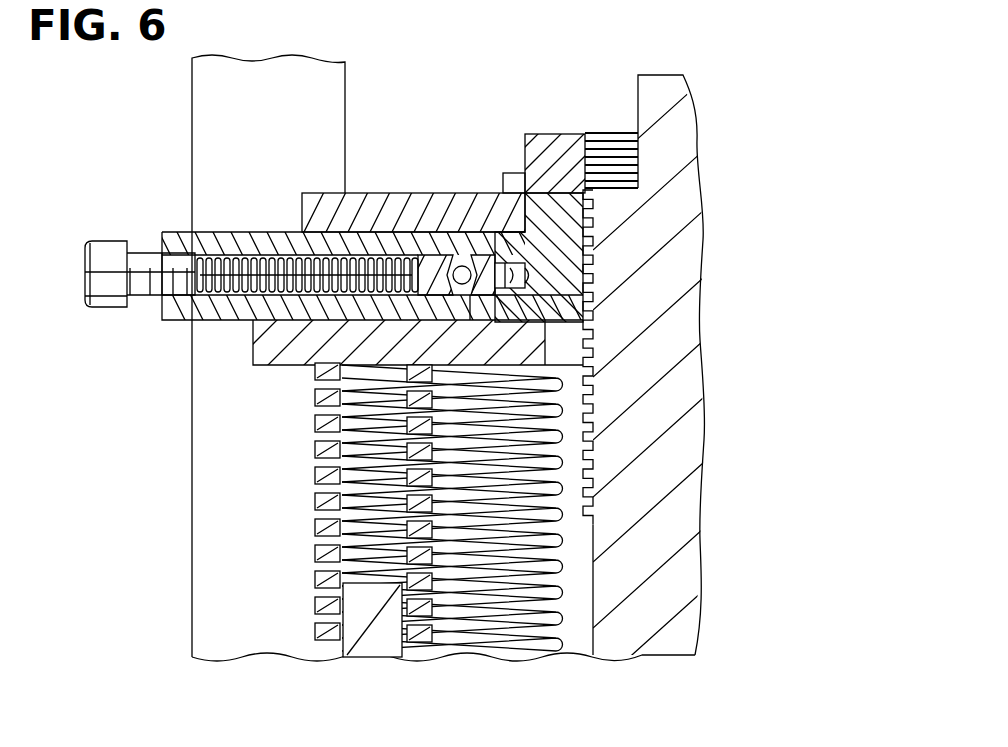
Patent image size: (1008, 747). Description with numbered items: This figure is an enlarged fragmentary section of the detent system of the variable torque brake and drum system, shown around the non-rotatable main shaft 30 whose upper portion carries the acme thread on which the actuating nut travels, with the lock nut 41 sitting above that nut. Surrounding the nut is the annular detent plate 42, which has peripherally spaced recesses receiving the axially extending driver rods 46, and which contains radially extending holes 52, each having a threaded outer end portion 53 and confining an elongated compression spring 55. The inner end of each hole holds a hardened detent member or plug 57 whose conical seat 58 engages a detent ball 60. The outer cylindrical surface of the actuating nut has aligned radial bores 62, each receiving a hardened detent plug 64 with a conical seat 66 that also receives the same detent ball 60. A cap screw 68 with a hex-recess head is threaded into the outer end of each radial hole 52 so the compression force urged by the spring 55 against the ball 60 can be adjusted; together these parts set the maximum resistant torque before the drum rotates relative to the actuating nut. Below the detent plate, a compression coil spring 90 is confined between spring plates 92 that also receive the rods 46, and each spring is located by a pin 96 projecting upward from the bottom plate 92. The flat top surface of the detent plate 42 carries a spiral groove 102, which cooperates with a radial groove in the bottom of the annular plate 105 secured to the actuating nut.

The main shaft 30 is at (696, 334).
The lock nut 41 is at (552, 142).
The detent plate 42 is at (180, 308).
The driver rods 46 is at (214, 513).
The radial holes 52 is at (362, 257).
The threaded outer end portion 53 is at (153, 251).
The compression spring 55 is at (282, 276).
The detent member or plug 57 is at (426, 257).
The conical seat 58 is at (450, 257).
The detent ball 60 is at (470, 267).
The radial bore 62 is at (507, 262).
The detent member or plug 64 is at (506, 280).
The conical seat 66 is at (482, 286).
The cap screw 68 is at (84, 250).
The compression coil spring 90 is at (480, 636).
The spring plate 92 is at (263, 354).
The pin 96 is at (357, 610).
The spiral groove 102 is at (300, 248).
The annular plate 105 is at (317, 197).